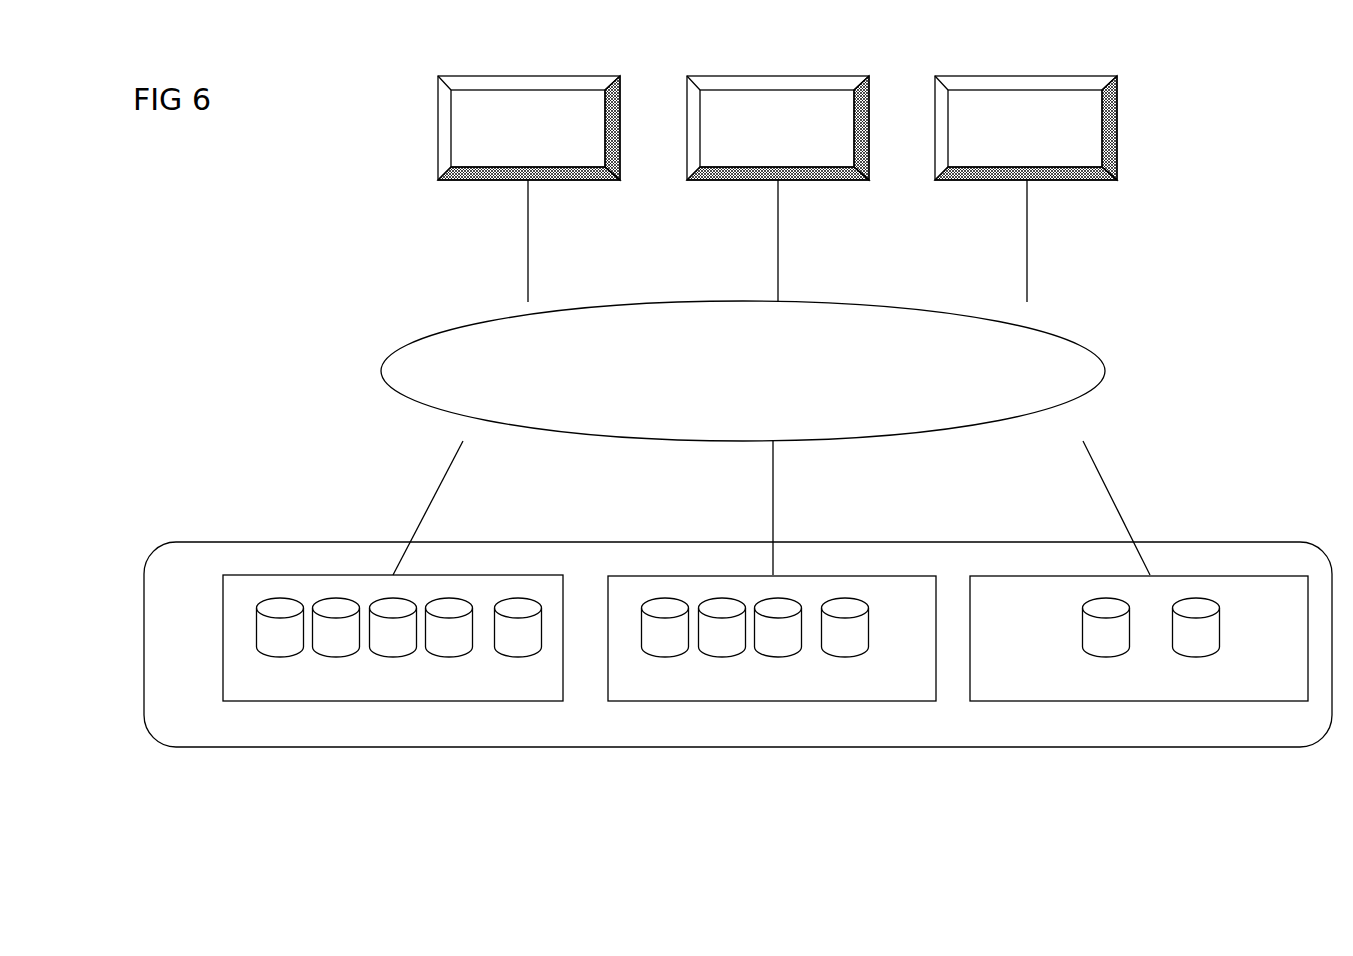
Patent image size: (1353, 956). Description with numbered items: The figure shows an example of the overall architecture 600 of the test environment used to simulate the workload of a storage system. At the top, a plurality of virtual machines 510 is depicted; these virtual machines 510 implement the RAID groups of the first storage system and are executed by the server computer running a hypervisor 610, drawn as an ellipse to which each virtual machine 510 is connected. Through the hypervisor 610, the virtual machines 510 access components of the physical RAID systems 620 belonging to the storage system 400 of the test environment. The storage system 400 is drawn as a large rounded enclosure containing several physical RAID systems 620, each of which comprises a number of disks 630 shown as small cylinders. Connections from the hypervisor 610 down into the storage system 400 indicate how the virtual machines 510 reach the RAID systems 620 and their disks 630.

The overall architecture 600 is at (1226, 116).
The virtual machine 510 is at (777, 128).
The hypervisor 610 is at (743, 371).
The storage system 400 is at (1180, 538).
The physical RAID system 620 is at (765, 638).
The disk 630 is at (518, 658).